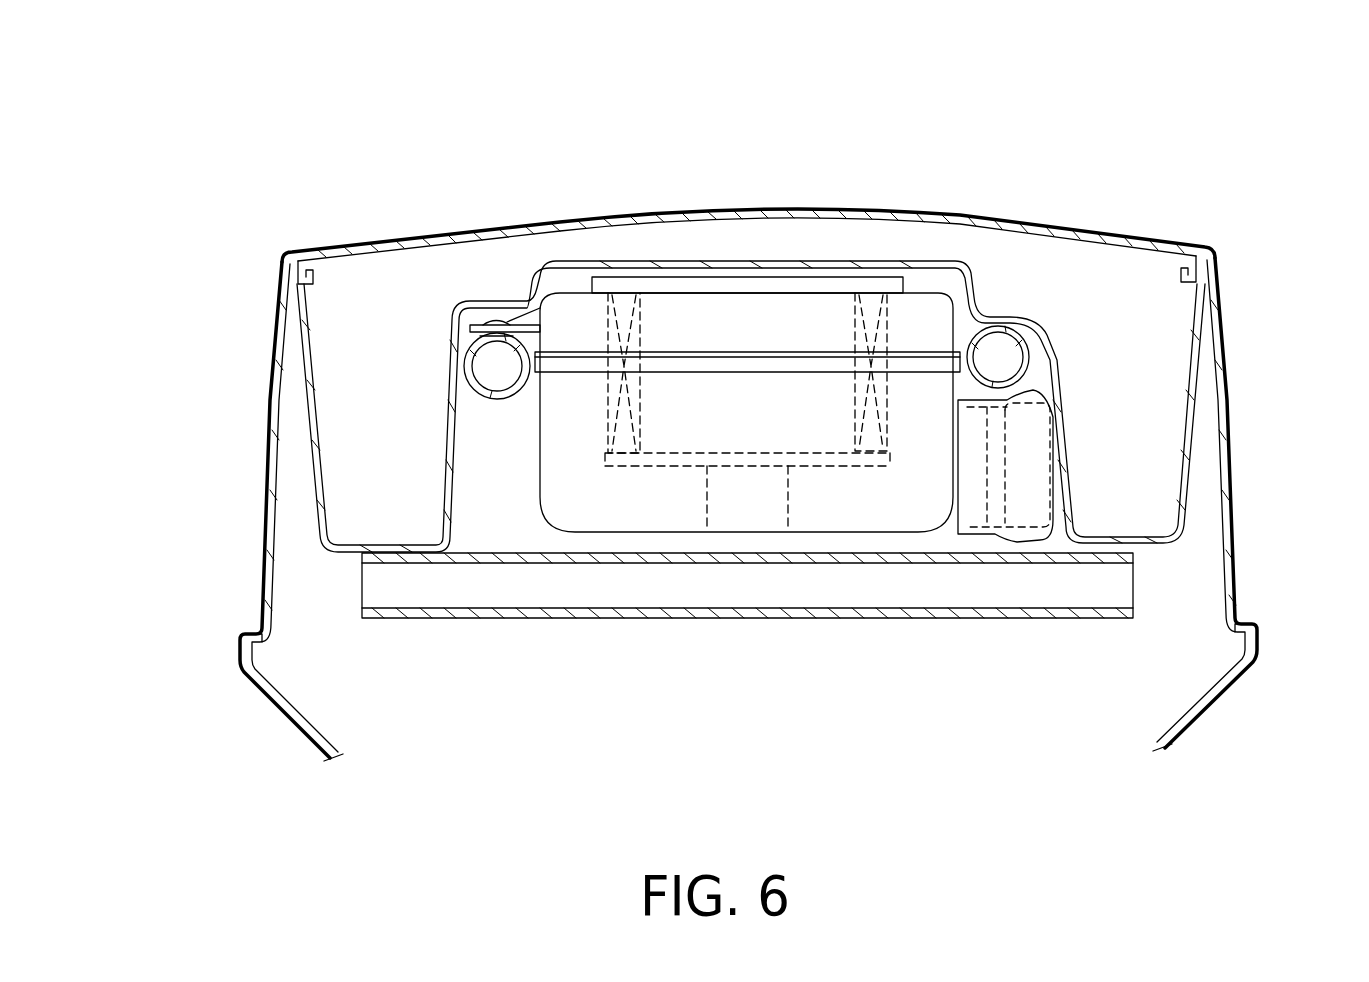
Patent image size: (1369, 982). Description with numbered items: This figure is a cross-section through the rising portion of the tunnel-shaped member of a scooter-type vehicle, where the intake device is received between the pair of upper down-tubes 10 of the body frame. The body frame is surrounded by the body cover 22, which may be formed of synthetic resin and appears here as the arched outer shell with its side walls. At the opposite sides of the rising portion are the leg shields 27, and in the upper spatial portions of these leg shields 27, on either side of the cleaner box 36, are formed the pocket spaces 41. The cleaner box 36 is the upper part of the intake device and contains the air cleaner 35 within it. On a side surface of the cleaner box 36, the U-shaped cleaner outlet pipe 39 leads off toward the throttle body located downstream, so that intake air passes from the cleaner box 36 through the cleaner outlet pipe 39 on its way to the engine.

The upper down-tube 10 is at (468, 360).
The body cover 22 is at (1155, 222).
The leg shield 27 is at (1232, 505).
The air cleaner 35 is at (603, 333).
The cleaner box 36 is at (712, 322).
The cleaner outlet pipe 39 is at (1020, 515).
The pocket space 41 is at (382, 470).